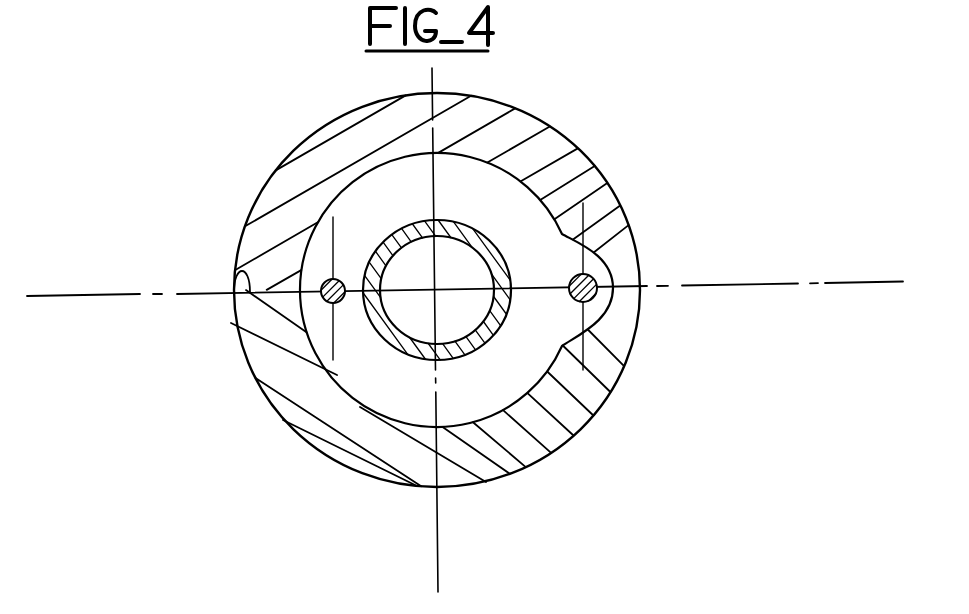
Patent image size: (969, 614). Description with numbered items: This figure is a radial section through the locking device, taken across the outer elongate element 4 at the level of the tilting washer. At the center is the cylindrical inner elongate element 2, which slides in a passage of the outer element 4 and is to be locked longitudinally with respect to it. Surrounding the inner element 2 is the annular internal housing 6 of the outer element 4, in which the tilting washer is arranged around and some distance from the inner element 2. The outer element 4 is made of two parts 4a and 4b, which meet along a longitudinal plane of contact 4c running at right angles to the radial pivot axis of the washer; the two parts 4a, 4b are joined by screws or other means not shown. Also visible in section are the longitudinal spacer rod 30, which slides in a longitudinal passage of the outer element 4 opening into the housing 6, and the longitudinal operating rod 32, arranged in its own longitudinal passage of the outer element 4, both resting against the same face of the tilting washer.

The inner elongate element 2 is at (405, 350).
The outer elongate element 4 is at (409, 290).
The first part of the outer element 4a is at (266, 226).
The second part of the outer element 4b is at (296, 413).
The longitudinal plane of contact 4c is at (243, 263).
The annular internal housing 6 is at (494, 381).
The longitudinal spacer rod 30 is at (321, 297).
The longitudinal operating rod 32 is at (596, 276).